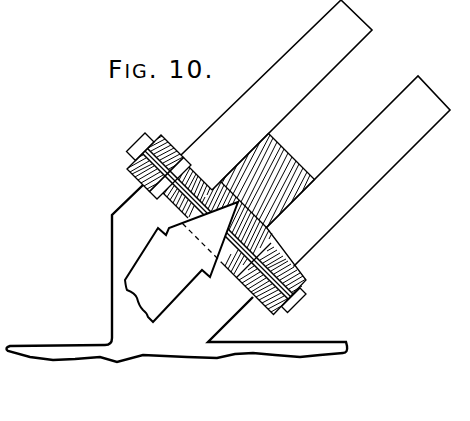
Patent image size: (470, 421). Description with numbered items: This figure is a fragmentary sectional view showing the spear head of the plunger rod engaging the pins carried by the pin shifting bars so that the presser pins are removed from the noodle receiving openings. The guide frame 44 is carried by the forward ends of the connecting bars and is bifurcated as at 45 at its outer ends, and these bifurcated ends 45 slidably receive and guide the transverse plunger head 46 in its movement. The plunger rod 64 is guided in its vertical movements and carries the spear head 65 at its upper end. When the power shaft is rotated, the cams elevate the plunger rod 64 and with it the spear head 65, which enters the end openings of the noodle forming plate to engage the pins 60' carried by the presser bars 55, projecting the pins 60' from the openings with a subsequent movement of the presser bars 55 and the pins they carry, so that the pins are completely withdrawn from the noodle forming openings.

The guide frame 44 is at (176, 273).
The bifurcated outer ends 45 is at (315, 133).
The transverse plunger head 46 is at (291, 155).
The presser bar 55 is at (130, 163).
The pin 60' is at (218, 225).
The plunger rod 64 is at (181, 262).
The spear head 65 is at (212, 208).